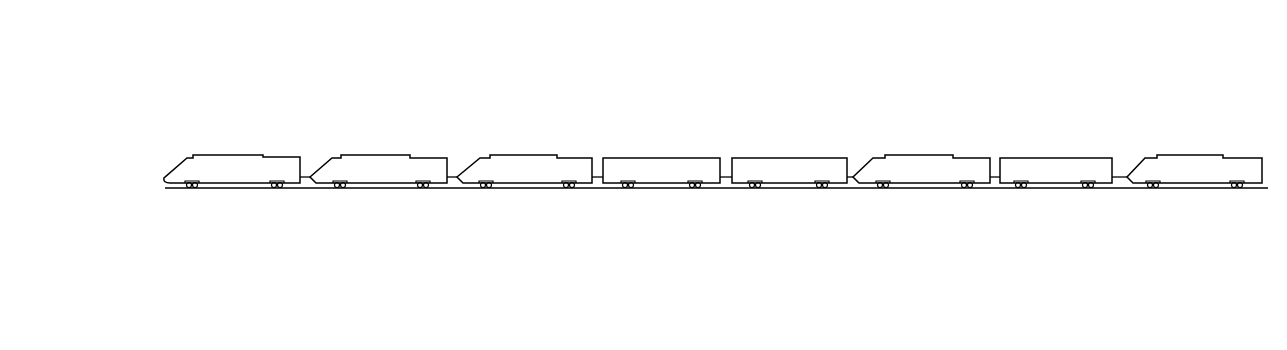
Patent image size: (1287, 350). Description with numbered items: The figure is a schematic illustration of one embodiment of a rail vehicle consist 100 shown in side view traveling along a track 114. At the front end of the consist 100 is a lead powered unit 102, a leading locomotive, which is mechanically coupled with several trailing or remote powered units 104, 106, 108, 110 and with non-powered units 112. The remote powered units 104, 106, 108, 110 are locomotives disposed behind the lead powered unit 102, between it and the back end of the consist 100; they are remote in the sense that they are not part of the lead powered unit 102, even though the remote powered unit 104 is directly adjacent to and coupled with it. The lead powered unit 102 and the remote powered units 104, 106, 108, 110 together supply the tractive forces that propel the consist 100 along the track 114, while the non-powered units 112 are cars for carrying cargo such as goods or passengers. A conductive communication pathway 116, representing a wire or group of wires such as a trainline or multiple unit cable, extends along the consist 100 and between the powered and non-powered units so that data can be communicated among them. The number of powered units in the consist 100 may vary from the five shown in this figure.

The rail vehicle consist 100 is at (908, 78).
The lead powered unit 102 is at (243, 154).
The remote powered unit 104 is at (378, 154).
The remote powered unit 106 is at (570, 154).
The remote powered unit 108 is at (940, 154).
The remote powered unit 110 is at (1194, 149).
The non-powered units 112 is at (760, 156).
The track 114 is at (1219, 190).
The conductive communication pathway 116 is at (452, 174).